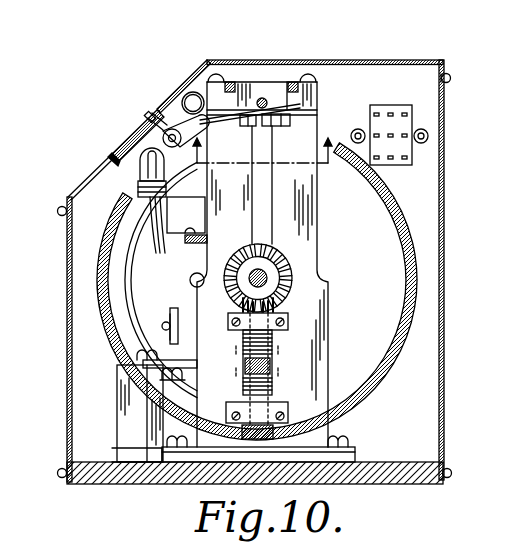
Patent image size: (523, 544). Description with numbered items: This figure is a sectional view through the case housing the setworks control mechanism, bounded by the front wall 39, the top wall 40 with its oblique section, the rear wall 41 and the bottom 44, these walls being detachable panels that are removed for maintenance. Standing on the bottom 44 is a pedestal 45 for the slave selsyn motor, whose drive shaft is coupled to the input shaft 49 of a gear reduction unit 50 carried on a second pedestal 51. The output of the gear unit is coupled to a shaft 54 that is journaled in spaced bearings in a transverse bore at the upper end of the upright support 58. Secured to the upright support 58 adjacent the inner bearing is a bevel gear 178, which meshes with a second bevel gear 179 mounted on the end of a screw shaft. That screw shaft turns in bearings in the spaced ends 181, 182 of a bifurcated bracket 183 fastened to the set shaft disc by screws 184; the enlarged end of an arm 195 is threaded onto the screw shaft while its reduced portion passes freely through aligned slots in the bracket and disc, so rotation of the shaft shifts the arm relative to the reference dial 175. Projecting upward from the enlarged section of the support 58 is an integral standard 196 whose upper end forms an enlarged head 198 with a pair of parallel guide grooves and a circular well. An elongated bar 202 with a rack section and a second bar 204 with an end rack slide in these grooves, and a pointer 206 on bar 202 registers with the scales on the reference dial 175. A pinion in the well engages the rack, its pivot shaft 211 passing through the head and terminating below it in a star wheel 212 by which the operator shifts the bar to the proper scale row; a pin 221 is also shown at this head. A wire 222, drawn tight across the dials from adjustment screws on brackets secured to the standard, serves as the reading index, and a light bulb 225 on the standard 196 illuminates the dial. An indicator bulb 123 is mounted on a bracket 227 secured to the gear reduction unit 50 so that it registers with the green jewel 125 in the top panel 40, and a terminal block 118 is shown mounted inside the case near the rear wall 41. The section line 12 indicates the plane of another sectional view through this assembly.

The section line 12 is at (261, 155).
The front wall 39 is at (67, 376).
The top wall 40 is at (388, 62).
The rear wall 41 is at (446, 333).
The bottom 44 is at (387, 486).
The pedestal 45 is at (120, 400).
The input shaft 49 is at (194, 279).
The gear reduction unit 50 is at (187, 301).
The pedestal 51 is at (160, 447).
The shaft 54 is at (275, 258).
The upright support 58 is at (329, 364).
The terminal block 118 is at (380, 106).
The indicator bulb 123 is at (140, 165).
The jewel 125 is at (116, 133).
The reference dial 175 is at (354, 404).
The bevel gear 178 is at (285, 270).
The second bevel gear 179 is at (290, 308).
The spaced end of bracket 181 is at (229, 318).
The spaced end of bracket 182 is at (288, 416).
The bifurcated bracket 183 is at (280, 387).
The screws 184 is at (232, 323).
The arm 195 is at (243, 377).
The standard 196 is at (318, 222).
The enlarged head 198 is at (315, 104).
The elongated bar 202 is at (292, 82).
The second bar 204 is at (232, 82).
The pointer 206 is at (170, 129).
The pivot shaft 211 is at (281, 127).
The star wheel 212 is at (246, 127).
The lever pivot pin 221 is at (262, 98).
The wire 222 is at (150, 117).
The light bulb 225 is at (192, 92).
The bracket 227 is at (187, 220).